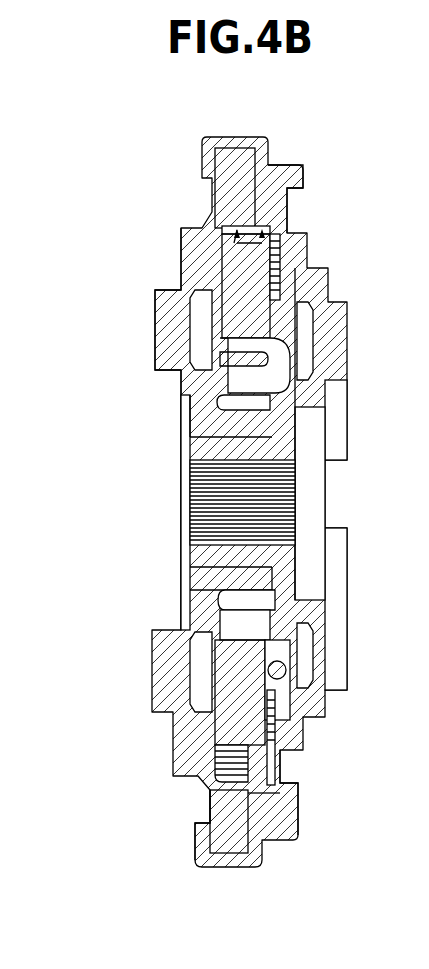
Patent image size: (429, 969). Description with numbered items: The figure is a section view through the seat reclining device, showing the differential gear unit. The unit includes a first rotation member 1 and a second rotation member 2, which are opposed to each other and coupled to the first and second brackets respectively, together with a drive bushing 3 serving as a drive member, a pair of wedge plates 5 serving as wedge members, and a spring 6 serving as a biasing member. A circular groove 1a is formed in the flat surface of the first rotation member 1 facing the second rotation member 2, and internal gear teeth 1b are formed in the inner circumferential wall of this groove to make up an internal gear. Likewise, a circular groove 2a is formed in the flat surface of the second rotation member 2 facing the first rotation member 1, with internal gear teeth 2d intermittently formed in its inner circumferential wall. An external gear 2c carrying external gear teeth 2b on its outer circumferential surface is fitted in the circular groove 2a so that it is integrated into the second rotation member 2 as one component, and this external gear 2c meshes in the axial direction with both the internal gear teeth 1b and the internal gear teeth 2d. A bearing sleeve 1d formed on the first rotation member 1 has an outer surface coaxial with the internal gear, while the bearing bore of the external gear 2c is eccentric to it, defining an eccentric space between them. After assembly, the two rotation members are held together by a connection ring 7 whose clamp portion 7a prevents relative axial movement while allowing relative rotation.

The first rotation member 1 is at (168, 322).
The circular groove 1a is at (230, 277).
The internal gear teeth 1b is at (230, 243).
The bearing sleeve 1d is at (290, 432).
The second rotation member 2 is at (347, 362).
The circular groove 2a is at (287, 595).
The external gear teeth 2b is at (247, 220).
The external gear 2c is at (318, 294).
The internal gear teeth 2d is at (293, 248).
The drive bushing 3 is at (282, 575).
The wedge plates 5 is at (232, 398).
The spring 6 is at (284, 357).
The connection ring 7 is at (262, 852).
The clamp portion 7a is at (200, 840).